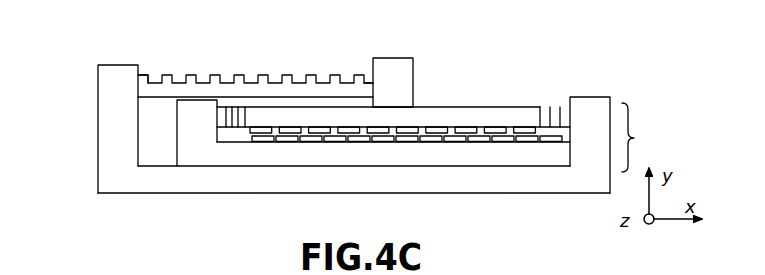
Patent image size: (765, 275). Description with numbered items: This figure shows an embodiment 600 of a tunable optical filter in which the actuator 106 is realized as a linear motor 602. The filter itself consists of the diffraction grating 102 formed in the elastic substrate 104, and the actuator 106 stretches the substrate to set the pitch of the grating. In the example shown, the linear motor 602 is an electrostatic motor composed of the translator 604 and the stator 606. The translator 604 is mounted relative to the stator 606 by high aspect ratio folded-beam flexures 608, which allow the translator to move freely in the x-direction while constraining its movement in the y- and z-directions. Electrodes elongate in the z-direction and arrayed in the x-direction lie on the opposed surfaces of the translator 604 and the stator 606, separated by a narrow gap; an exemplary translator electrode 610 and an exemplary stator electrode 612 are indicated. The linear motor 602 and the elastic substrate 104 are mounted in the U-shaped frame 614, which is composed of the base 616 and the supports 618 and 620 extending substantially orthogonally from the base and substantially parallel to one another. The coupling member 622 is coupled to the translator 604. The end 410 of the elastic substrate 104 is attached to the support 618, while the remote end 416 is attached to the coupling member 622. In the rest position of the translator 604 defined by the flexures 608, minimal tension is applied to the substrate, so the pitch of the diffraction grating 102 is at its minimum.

The embodiment of a tunable optical filter 600 is at (603, 46).
The linear motor 602 is at (469, 63).
The translator 604 is at (500, 118).
The stator 606 is at (368, 158).
The high aspect ratio folded-beam flexures 608 is at (242, 106).
The translator electrode 610 is at (440, 128).
The stator electrode 612 is at (452, 141).
The U-shaped frame 614 is at (98, 103).
The base 616 is at (282, 175).
The support 618 is at (110, 123).
The support 620 is at (598, 107).
The coupling member 622 is at (403, 72).
The diffraction grating 102 is at (217, 74).
The elastic substrate 104 is at (278, 82).
The actuator 106 is at (634, 138).
The end of the elastic substrate 410 is at (137, 77).
The end of the elastic substrate 416 is at (374, 81).